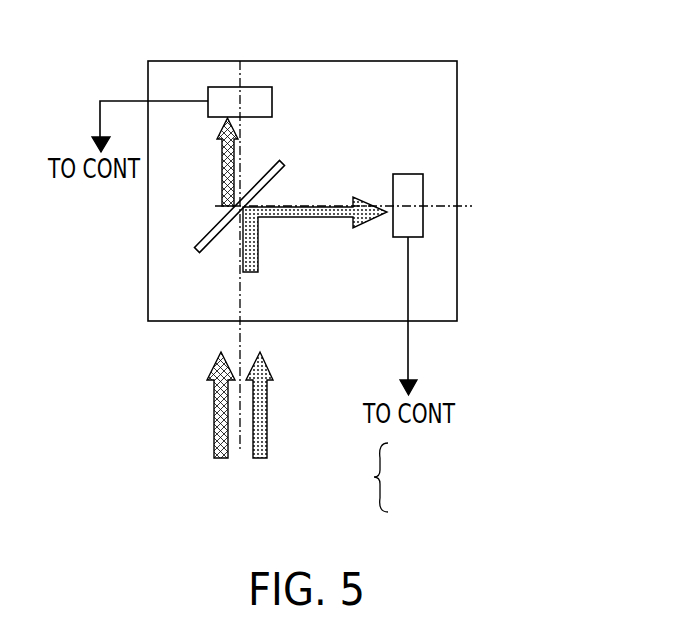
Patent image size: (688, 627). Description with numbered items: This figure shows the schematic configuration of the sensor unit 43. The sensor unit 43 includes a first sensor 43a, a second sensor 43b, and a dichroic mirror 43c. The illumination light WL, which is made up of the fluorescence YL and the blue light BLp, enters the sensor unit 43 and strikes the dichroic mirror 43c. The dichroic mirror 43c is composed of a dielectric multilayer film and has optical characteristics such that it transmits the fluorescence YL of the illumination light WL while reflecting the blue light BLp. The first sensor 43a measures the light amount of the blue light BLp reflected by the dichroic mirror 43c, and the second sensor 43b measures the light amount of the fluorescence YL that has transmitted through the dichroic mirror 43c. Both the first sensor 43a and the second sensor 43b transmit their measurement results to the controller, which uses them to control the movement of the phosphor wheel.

The sensor unit 43 is at (457, 85).
The first sensor 43a is at (410, 228).
The second sensor 43b is at (257, 98).
The dichroic mirror 43c is at (205, 234).
The fluorescence YL is at (236, 147).
The blue light BLp is at (308, 215).
The illumination light WL is at (397, 477).